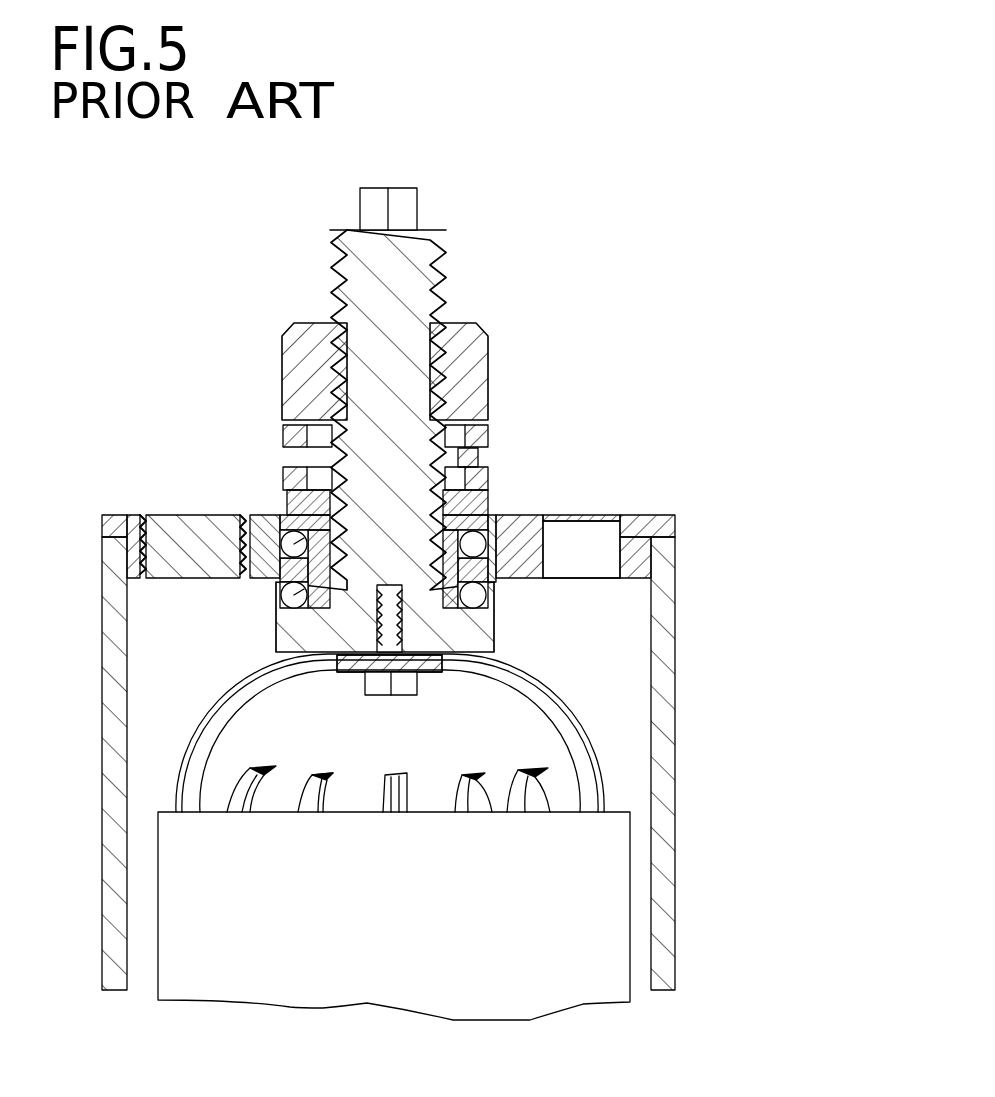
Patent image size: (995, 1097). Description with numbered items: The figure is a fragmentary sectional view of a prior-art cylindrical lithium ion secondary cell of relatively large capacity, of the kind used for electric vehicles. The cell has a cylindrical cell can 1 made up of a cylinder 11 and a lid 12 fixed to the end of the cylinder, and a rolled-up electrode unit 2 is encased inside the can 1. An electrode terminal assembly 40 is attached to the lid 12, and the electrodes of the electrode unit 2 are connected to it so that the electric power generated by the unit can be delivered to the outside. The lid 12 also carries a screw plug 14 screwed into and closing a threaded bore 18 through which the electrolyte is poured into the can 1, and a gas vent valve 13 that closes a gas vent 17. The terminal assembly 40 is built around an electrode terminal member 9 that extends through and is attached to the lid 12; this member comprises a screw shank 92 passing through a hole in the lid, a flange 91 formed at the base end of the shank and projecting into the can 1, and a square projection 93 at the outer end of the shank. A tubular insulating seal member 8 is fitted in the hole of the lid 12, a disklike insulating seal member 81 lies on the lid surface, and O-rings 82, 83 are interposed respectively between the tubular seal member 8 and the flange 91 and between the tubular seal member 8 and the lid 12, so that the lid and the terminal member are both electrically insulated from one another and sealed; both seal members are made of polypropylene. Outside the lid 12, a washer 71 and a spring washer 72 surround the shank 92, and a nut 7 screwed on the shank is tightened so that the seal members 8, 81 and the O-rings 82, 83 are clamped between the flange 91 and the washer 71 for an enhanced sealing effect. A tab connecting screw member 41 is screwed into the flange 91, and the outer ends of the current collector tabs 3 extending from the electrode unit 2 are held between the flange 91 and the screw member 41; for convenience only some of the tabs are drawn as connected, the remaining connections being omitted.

The cylindrical cell can 1 is at (426, 721).
The rolled-up electrode unit 2 is at (426, 941).
The current collector tabs 3 is at (248, 687).
The nut 7 is at (470, 388).
The tubular insulating seal member 8 is at (500, 548).
The electrode terminal member 9 is at (400, 325).
The cylinder 11 is at (660, 633).
The lid 12 is at (668, 520).
The gas vent valve 13 is at (600, 514).
The screw plug 14 is at (192, 520).
The gas vent 17 is at (614, 580).
The threaded bore 18 is at (143, 518).
The electrode terminal assembly 40 is at (439, 434).
The tab connecting screw member 41 is at (354, 668).
The washer 71 is at (330, 452).
The spring washer 72 is at (332, 428).
The disklike insulating seal member 81 is at (285, 506).
The O-ring 82 is at (288, 597).
The O-ring 83 is at (300, 540).
The flange 91 is at (484, 632).
The screw shank 92 is at (337, 282).
The square projection 93 is at (362, 190).